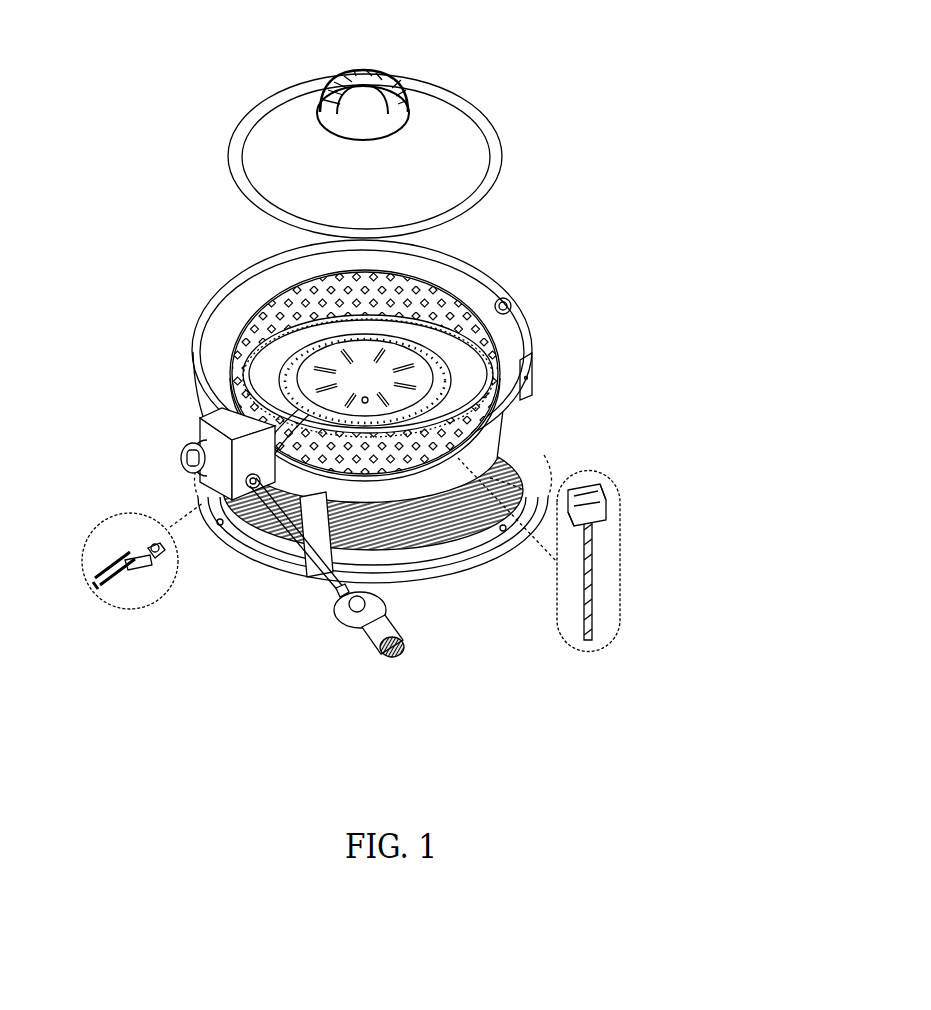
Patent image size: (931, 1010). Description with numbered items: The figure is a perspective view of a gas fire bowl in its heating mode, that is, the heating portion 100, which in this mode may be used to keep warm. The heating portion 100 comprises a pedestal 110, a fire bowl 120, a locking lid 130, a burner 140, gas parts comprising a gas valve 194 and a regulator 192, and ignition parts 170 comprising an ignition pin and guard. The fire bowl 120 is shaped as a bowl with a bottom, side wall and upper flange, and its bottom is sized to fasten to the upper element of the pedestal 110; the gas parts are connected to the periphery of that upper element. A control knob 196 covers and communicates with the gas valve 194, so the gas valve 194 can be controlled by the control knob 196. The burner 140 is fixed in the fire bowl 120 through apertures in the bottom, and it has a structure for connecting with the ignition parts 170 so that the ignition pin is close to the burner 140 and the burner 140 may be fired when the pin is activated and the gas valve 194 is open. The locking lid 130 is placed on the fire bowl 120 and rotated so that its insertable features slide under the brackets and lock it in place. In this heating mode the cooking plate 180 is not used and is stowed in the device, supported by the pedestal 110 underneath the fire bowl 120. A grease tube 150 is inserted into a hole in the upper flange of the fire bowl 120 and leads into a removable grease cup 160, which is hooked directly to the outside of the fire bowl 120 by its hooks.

The heating portion 100 is at (160, 76).
The pedestal 110 is at (205, 489).
The fire bowl 120 is at (308, 258).
The locking lid 130 is at (447, 141).
The burner 140 is at (463, 297).
The grease tube 150 is at (503, 303).
The grease cup 160 is at (530, 390).
The ignition parts 170 is at (612, 497).
The cooking plate 180 is at (403, 538).
The regulator 192 is at (348, 613).
The gas valve 194 is at (107, 567).
The control knob 196 is at (182, 454).